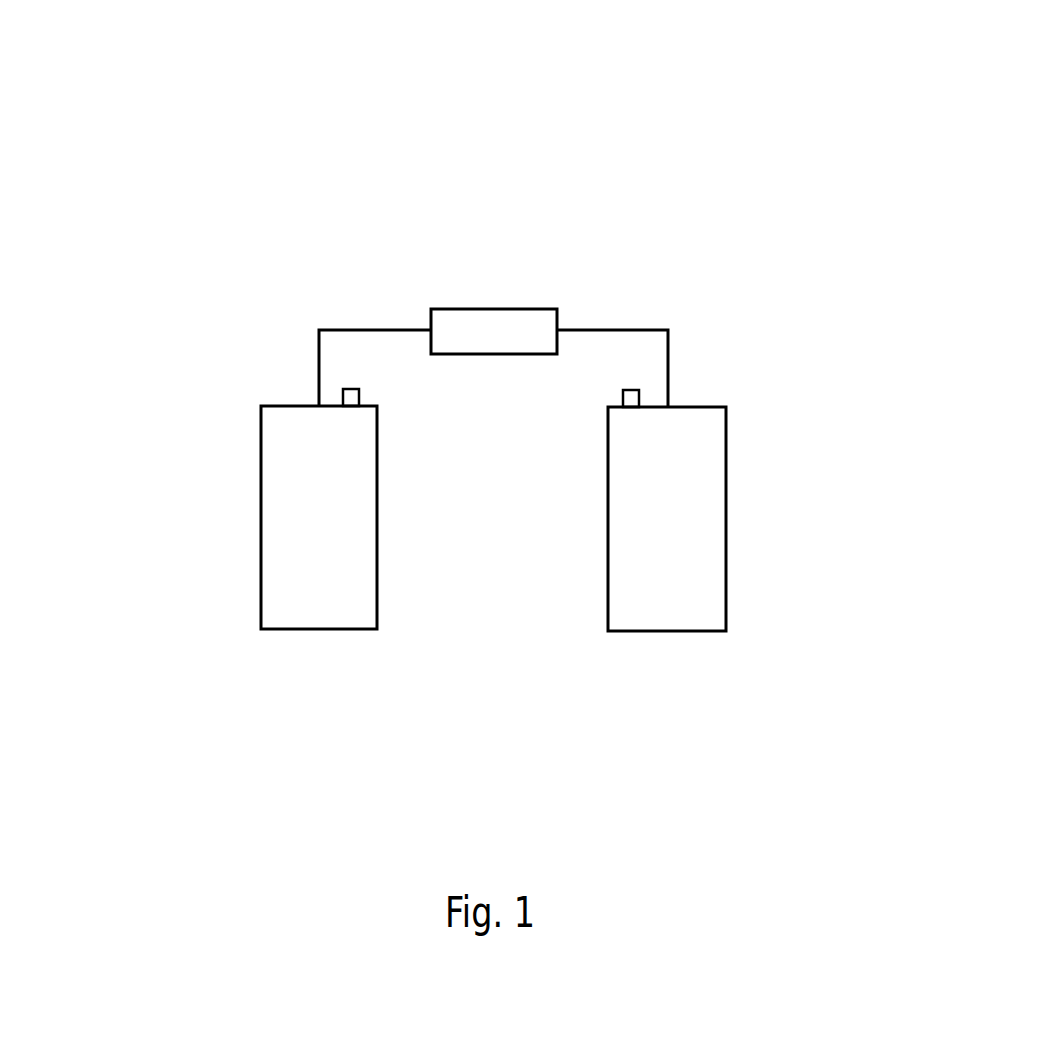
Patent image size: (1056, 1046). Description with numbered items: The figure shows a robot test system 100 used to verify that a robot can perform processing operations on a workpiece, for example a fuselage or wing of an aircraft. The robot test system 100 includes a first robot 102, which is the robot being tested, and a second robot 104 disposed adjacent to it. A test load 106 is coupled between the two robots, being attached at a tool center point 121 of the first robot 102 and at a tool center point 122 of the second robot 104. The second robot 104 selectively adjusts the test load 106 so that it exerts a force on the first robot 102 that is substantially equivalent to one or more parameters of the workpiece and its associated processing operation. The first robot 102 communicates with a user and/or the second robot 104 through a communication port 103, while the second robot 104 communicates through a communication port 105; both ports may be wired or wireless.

The robot test system 100 is at (930, 108).
The first robot 102 is at (261, 545).
The communication port 103 is at (359, 390).
The second robot 104 is at (726, 512).
The communication port 105 is at (623, 391).
The test load 106 is at (487, 309).
The tool center point 121 is at (319, 349).
The tool center point 122 is at (668, 346).